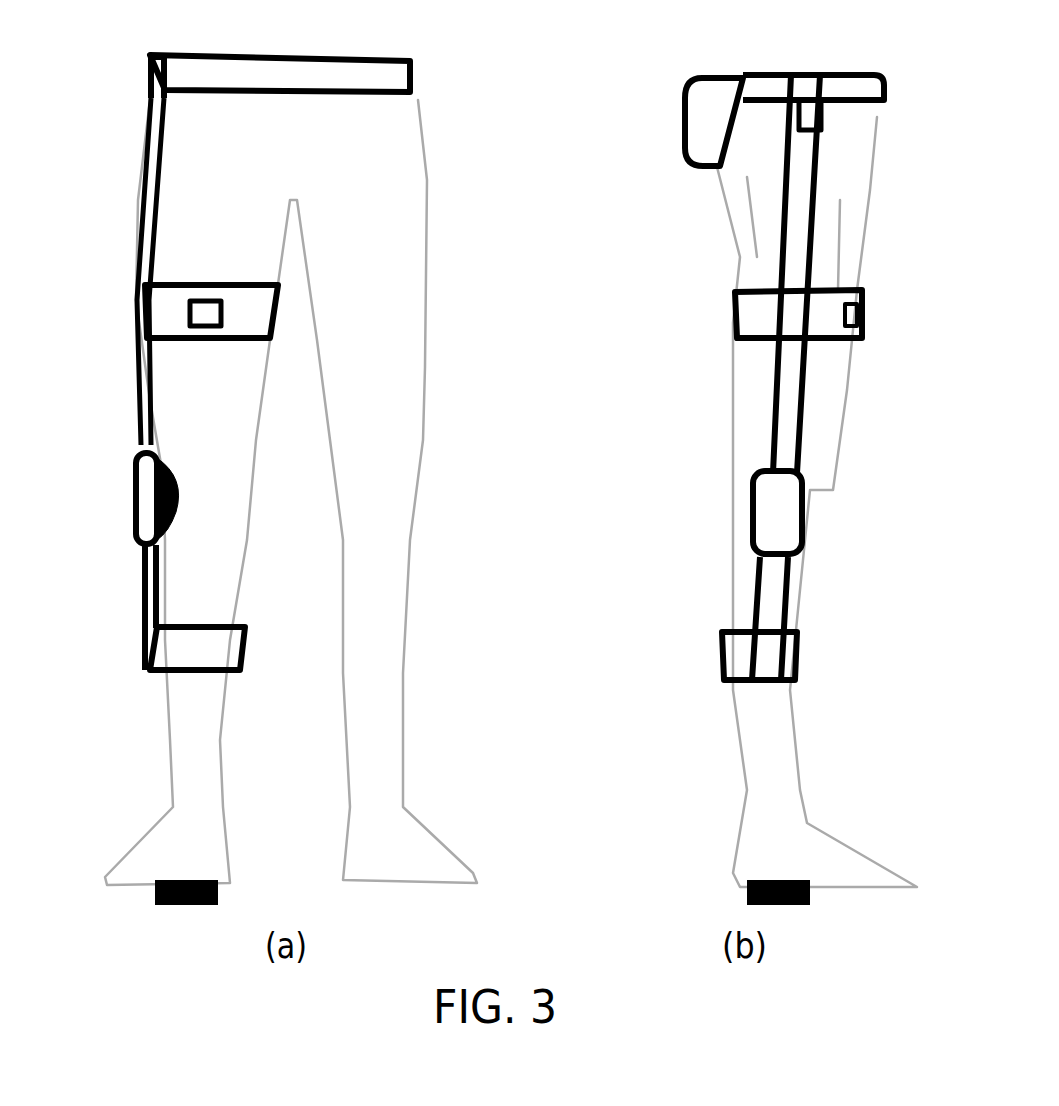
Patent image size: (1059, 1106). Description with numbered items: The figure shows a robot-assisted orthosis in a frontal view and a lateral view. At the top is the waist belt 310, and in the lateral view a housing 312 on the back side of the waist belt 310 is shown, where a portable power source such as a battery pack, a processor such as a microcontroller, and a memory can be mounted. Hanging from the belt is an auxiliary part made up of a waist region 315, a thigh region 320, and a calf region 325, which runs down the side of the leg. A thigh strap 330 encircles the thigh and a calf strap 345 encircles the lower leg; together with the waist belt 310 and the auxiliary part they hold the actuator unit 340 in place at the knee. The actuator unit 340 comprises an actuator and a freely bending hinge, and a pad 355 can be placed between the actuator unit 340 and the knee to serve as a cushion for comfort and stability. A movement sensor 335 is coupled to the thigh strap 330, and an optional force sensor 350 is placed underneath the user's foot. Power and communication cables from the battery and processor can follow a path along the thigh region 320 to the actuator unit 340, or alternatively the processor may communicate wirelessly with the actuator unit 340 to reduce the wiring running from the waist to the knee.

The waist belt 310 is at (365, 58).
The housing 312 is at (684, 110).
The waist region 315 is at (148, 86).
The thigh region 320 is at (137, 336).
The calf region 325 is at (146, 626).
The thigh strap 330 is at (178, 285).
The movement sensor 335 is at (207, 329).
The actuator unit 340 is at (134, 496).
The calf strap 345 is at (244, 650).
The force sensor 350 is at (219, 888).
The pad 355 is at (179, 496).